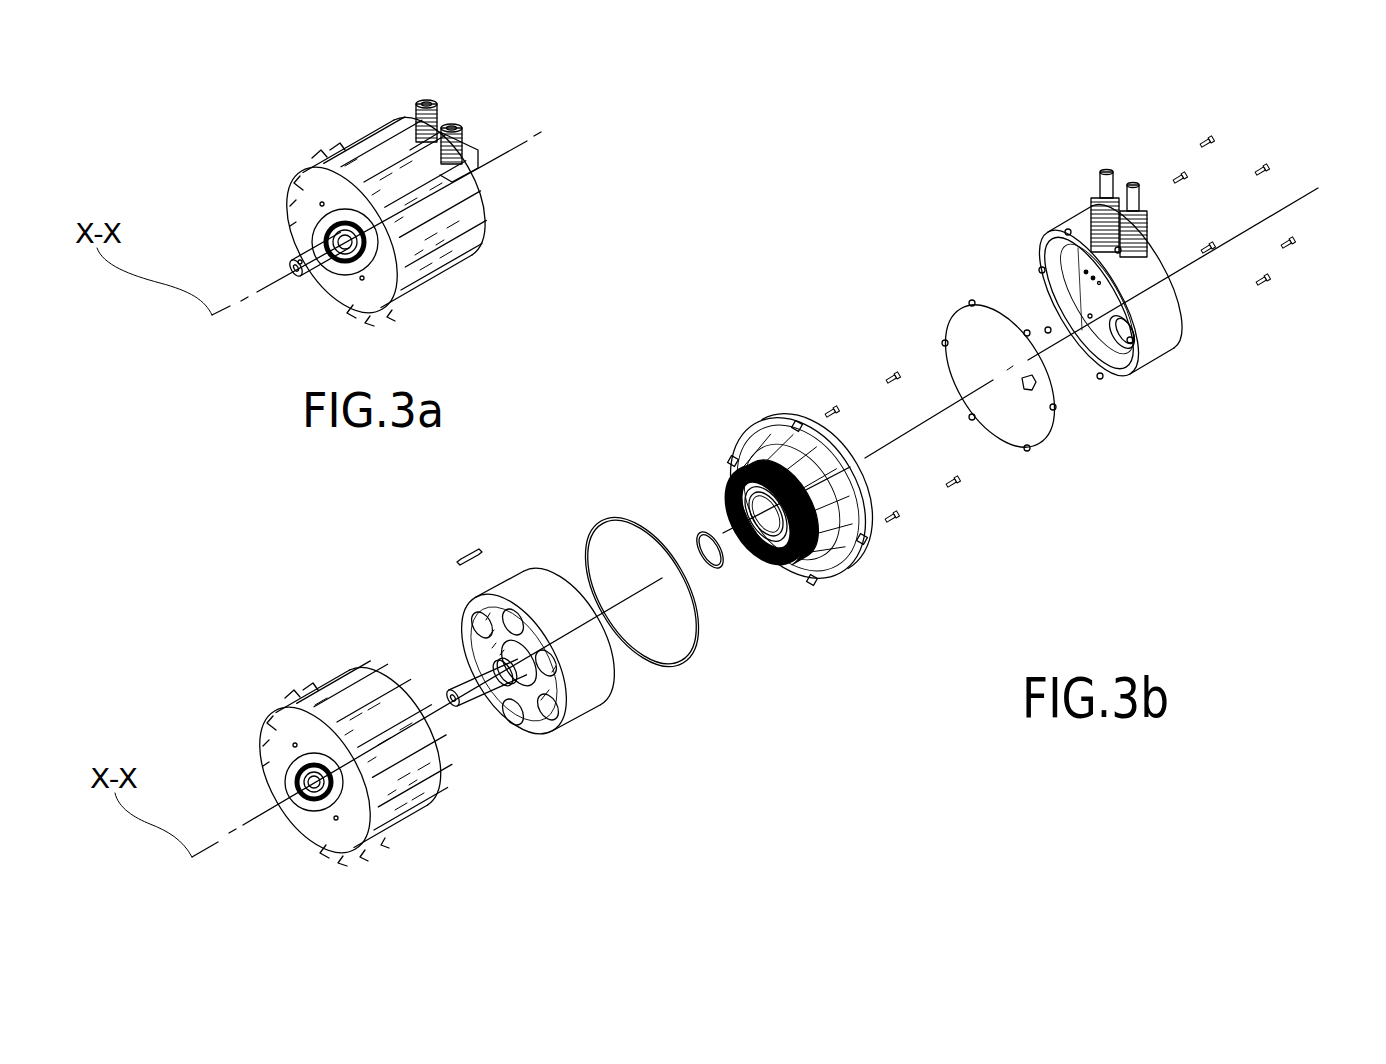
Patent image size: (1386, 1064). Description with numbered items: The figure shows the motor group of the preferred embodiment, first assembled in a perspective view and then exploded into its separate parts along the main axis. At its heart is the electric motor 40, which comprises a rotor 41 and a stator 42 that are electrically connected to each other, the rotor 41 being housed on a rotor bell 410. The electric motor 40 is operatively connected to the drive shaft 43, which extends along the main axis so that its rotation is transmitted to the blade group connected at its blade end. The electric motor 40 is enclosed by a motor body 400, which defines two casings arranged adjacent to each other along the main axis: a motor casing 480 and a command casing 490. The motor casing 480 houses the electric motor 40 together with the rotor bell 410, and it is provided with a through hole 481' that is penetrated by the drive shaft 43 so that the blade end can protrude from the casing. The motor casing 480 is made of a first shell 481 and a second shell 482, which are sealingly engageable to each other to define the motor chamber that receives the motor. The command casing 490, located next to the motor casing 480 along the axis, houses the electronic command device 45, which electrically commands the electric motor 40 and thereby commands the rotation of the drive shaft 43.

In FIG. 3A, the electric motor 40 is at (222, 94).
In FIG. 3A, the motor body 400 is at (337, 134).
In FIG. 3A, the motor casing 480 is at (271, 202).
In FIG. 3B, the motor casing 480 is at (454, 788).
In FIG. 3A, the command casing 490 is at (541, 242).
In FIG. 3B, the command casing 490 is at (1193, 352).
In FIG. 3B, the rotor 41 is at (547, 574).
In FIG. 3B, the rotor bell 410 is at (584, 680).
In FIG. 3B, the drive shaft 43 is at (452, 682).
In FIG. 3B, the stator 42 is at (790, 586).
In FIG. 3B, the second shell 482 is at (869, 540).
In FIG. 3B, the electronic command device 45 is at (1087, 263).
In FIG. 3B, the first shell 481 is at (382, 895).
In FIG. 3B, the through hole 481' is at (294, 733).